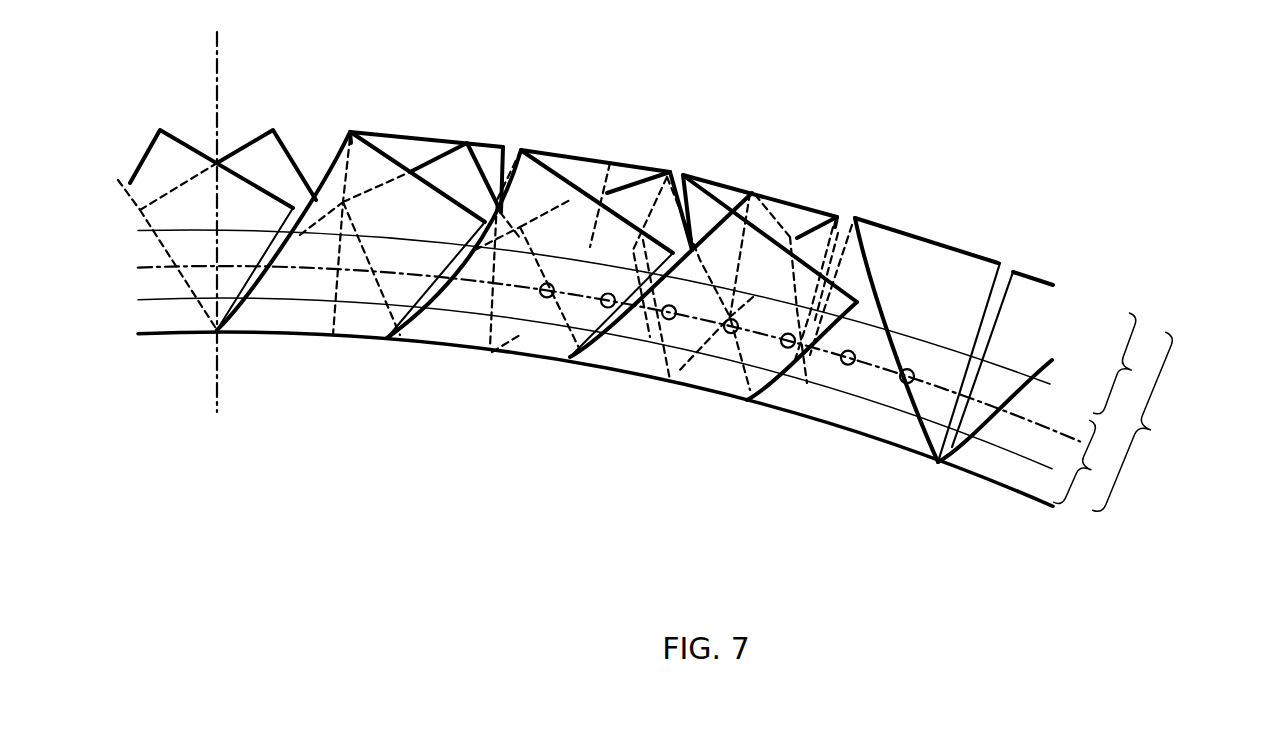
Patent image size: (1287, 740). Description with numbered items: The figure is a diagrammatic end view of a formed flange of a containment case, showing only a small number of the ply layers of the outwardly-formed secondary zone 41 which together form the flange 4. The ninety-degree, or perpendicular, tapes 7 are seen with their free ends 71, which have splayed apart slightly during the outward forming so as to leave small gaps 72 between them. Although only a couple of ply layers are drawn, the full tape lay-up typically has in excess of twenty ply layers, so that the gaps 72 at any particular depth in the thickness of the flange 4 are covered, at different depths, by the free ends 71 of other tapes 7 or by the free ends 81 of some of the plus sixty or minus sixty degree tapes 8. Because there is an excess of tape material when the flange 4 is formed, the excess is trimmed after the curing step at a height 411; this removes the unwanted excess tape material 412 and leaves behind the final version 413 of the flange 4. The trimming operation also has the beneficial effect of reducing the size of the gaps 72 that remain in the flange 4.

The flange 4 is at (988, 211).
The 90° (perpendicular) tapes 7 is at (417, 148).
The free ends 71 is at (487, 153).
The gaps 72 is at (512, 148).
The plus 60° or minus 60° tapes 8 is at (337, 182).
The free ends 81 is at (383, 162).
The secondary zone 41 is at (1152, 431).
The height 411 is at (1062, 400).
The excess tape material 412 is at (1133, 369).
The final version 413 is at (1093, 469).